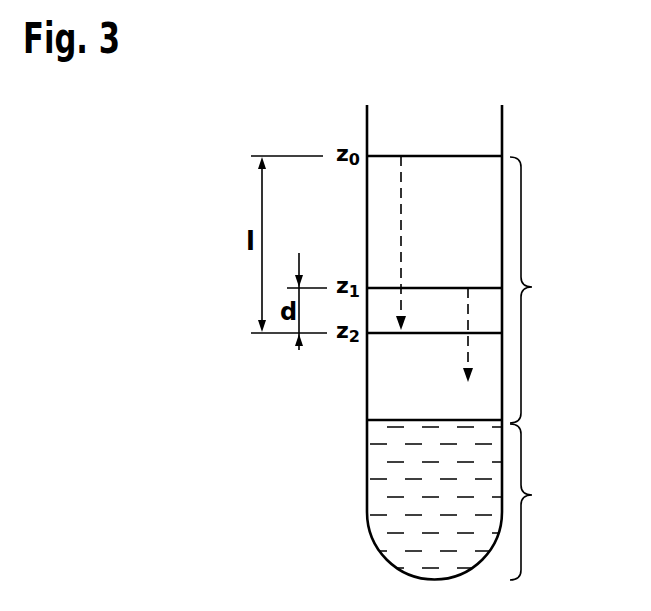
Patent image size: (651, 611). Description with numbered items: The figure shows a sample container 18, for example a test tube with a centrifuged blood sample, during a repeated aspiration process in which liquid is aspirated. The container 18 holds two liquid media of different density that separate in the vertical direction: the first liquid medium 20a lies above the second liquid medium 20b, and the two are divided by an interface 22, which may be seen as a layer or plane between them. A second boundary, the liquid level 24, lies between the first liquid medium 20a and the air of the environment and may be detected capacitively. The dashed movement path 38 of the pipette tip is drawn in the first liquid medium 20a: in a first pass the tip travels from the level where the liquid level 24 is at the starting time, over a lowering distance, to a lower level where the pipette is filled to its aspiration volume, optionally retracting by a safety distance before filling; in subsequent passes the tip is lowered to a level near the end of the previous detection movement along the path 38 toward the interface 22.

The sample container 18 is at (503, 127).
The first liquid medium 20a is at (474, 289).
The second liquid medium 20b is at (475, 502).
The interface 22 is at (405, 420).
The liquid level 24 is at (436, 155).
The movement path 38 is at (401, 202).